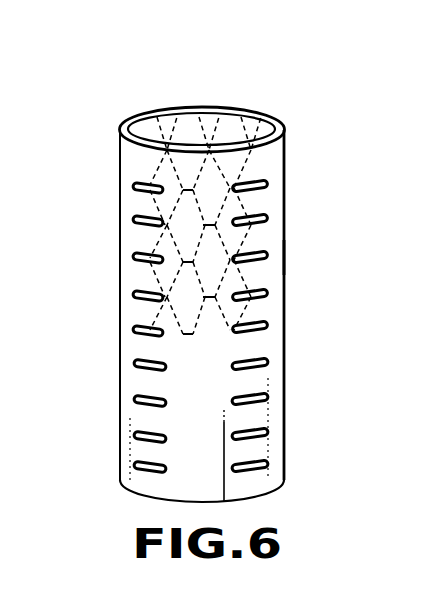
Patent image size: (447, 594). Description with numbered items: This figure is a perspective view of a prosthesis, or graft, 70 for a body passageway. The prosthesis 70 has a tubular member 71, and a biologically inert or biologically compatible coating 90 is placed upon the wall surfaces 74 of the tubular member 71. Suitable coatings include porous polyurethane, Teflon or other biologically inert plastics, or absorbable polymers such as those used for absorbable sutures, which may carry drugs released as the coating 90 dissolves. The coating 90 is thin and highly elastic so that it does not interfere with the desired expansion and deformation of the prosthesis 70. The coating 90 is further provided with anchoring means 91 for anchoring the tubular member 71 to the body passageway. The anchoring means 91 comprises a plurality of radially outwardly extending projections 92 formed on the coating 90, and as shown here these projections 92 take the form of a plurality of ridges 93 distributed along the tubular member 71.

The prosthesis 70 is at (263, 110).
The tubular member 71 is at (283, 135).
The wall surfaces 74 is at (281, 257).
The coating 90 is at (281, 198).
The anchoring means 91 is at (160, 200).
The radially outwardly extending projections 92 is at (147, 235).
The ridges 93 is at (281, 320).